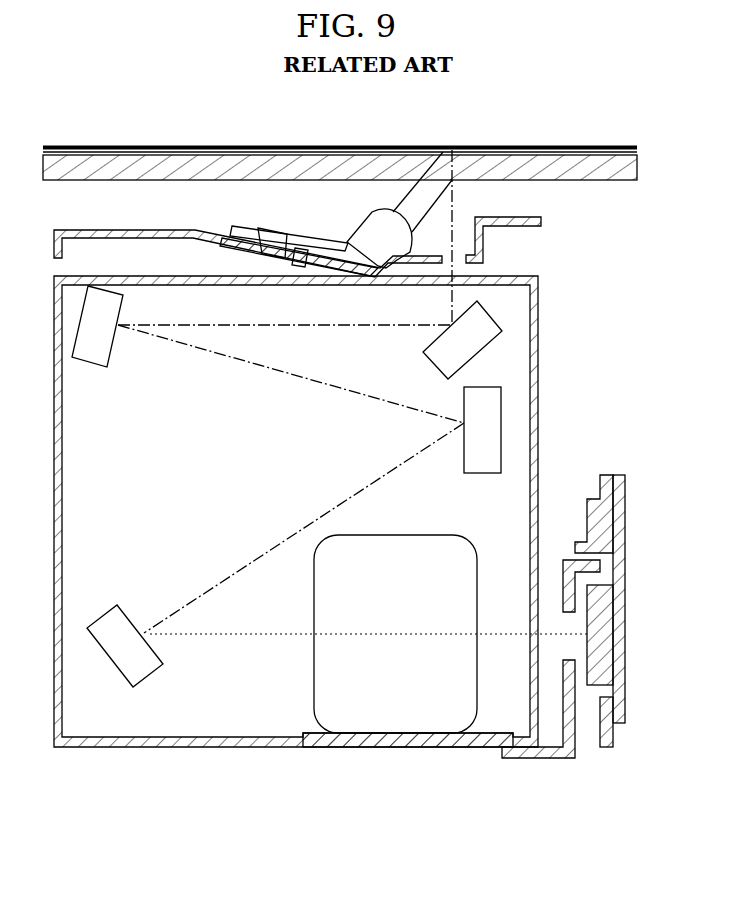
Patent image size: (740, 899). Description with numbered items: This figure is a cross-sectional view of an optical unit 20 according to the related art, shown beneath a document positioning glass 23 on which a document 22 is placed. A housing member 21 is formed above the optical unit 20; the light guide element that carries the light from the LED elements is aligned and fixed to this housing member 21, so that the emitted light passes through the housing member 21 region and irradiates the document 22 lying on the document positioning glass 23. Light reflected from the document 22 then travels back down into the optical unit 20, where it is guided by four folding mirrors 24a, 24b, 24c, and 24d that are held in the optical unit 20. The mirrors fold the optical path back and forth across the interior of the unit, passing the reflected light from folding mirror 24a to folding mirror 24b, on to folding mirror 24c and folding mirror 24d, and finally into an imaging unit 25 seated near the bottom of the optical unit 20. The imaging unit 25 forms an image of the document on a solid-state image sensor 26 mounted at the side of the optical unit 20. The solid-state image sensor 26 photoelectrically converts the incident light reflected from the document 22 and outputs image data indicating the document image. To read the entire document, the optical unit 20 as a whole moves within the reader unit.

The optical unit 20 is at (539, 367).
The housing member 21 is at (170, 229).
The document 22 is at (147, 146).
The document positioning glass 23 is at (525, 160).
The folding mirror 24a is at (432, 360).
The folding mirror 24b is at (108, 352).
The folding mirror 24c is at (485, 476).
The folding mirror 24d is at (148, 668).
The imaging unit 25 is at (399, 724).
The solid-state image sensor 26 is at (608, 640).